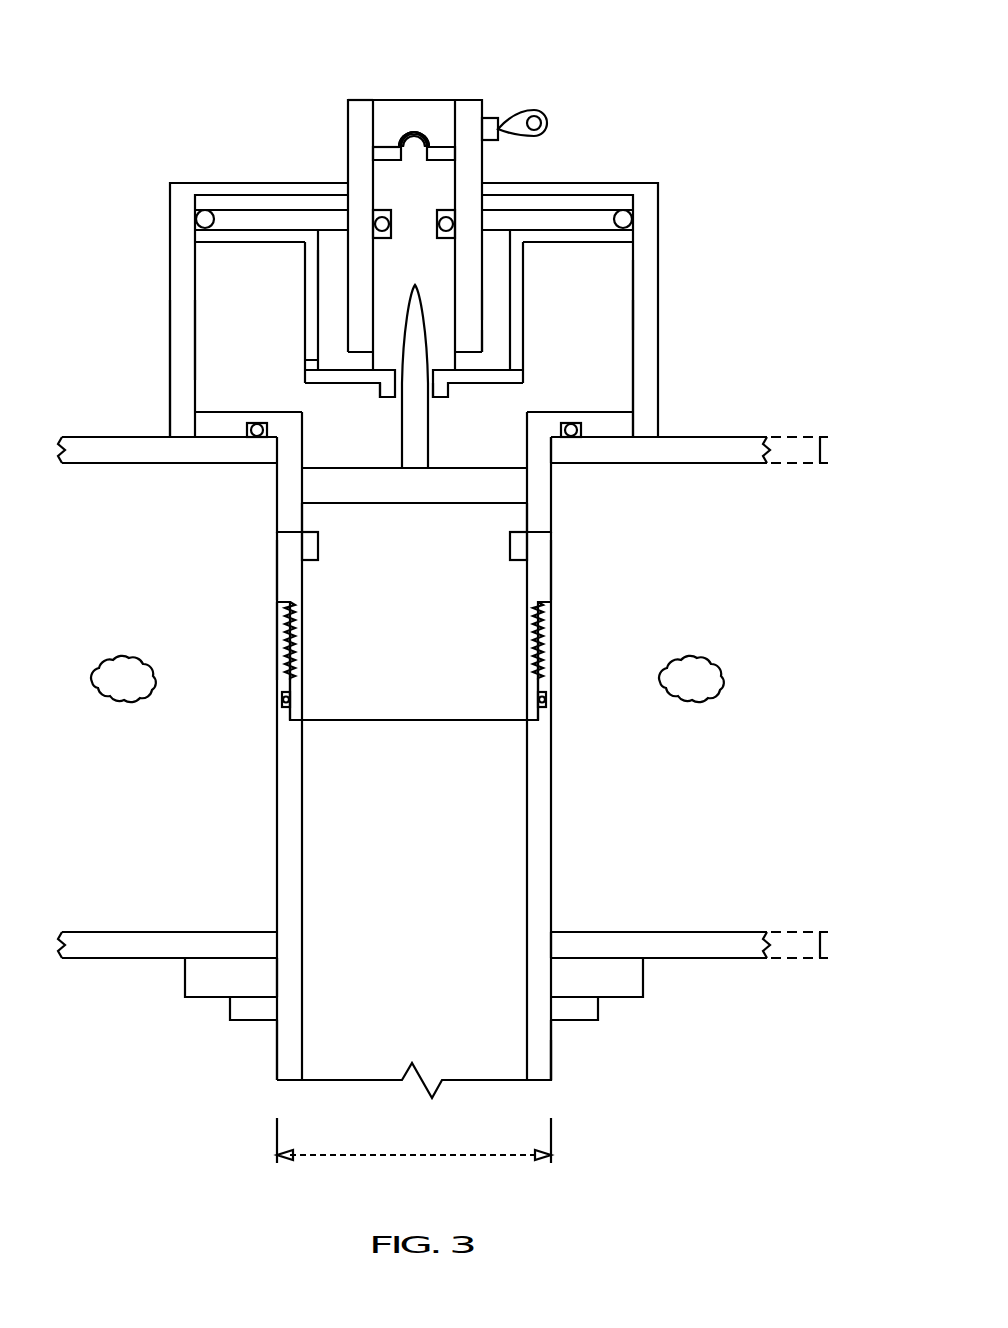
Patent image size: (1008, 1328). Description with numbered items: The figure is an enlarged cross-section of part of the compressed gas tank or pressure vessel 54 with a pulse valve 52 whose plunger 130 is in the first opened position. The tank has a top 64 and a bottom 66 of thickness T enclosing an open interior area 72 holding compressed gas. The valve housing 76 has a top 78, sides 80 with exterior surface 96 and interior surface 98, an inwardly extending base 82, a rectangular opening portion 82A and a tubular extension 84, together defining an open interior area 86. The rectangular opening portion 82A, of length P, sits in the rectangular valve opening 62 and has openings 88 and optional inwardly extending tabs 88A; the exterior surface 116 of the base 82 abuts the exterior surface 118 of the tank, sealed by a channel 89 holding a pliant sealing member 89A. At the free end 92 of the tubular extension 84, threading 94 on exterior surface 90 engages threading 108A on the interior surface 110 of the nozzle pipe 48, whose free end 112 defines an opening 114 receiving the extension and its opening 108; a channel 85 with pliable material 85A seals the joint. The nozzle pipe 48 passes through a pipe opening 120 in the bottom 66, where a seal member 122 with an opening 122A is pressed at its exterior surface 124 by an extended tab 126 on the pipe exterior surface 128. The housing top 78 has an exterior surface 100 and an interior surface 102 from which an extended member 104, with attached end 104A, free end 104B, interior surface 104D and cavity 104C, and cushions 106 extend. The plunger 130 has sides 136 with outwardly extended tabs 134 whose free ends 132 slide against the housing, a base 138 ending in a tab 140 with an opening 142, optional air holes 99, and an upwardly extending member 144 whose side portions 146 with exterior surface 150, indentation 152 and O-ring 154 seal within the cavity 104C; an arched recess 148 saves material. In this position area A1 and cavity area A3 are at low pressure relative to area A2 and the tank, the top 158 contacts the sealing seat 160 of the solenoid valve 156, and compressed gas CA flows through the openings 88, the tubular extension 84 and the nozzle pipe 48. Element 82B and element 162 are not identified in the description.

The nozzle pipe 48 is at (554, 1063).
The pulse valve 52 is at (745, 225).
The compressed gas tank or pressure vessel 54 is at (75, 437).
The rectangular valve opening 62 is at (555, 463).
The top 64 is at (678, 437).
The bottom 66 is at (673, 958).
The open interior area 72 is at (180, 547).
The valve housing 76 is at (660, 203).
The top 78 is at (576, 182).
The sides 80 is at (170, 290).
The inwardly extending base 82 is at (218, 412).
The rectangular opening portion 82A is at (277, 527).
The piston plate 82B is at (305, 478).
The tubular extension 84 is at (280, 540).
The channel 85 is at (282, 686).
The pliable material 85A is at (280, 700).
The open interior area 86 is at (616, 306).
The openings 88 is at (402, 506).
The inwardly extending tabs 88A is at (318, 549).
The channel 89 is at (256, 422).
The pliant sealing member 89A is at (257, 444).
The exterior surface 90 is at (277, 575).
The free end 92 is at (384, 722).
The threading 94 is at (298, 630).
The exterior surface 96 is at (170, 360).
The interior surface 98 is at (195, 333).
The air holes 99 is at (305, 362).
The exterior surface 100 is at (243, 183).
The interior surface 102 is at (258, 210).
The extended member 104 is at (496, 228).
The attached end 104A is at (330, 210).
The free end 104B is at (352, 380).
The open interior cavity 104C is at (444, 110).
The interior surface 104D is at (422, 470).
The dampening mechanisms or cushions 106 is at (208, 184).
The opening 108 is at (435, 722).
The threading 108A is at (296, 660).
The interior surface 110 is at (538, 767).
The free end 112 is at (281, 603).
The opening 114 is at (273, 616).
The exterior surface 116 is at (227, 445).
The exterior surface 118 is at (120, 437).
The pipe opening 120 is at (550, 944).
The seal member 122 is at (187, 1000).
The opening 122A is at (278, 977).
The exterior surface 124 is at (205, 998).
The extended tab 126 is at (240, 1022).
The exterior surface 128 is at (276, 1056).
The plunger 130 is at (596, 183).
The free ends 132 is at (197, 220).
The outwardly extended tabs 134 is at (218, 242).
The sides 136 is at (305, 305).
The base 138 is at (322, 384).
The tab 140 is at (400, 395).
The opening 142 is at (373, 348).
The upwardly extending member 144 is at (360, 100).
The side portions 146 is at (488, 340).
The arched recessed open interior area 148 is at (390, 240).
The exterior surface 150 is at (330, 264).
The indentation 152 is at (374, 150).
The O-ring 154 is at (444, 238).
The solenoid valve 156 is at (422, 110).
The top 158 is at (412, 136).
The sealing seat 160 is at (385, 143).
The port 162 is at (491, 118).
The area A1 is at (304, 198).
The area A2 is at (620, 327).
The area A3 is at (386, 100).
The compressed gas CA is at (407, 679).
The thickness T is at (844, 947).
The length P is at (414, 1140).